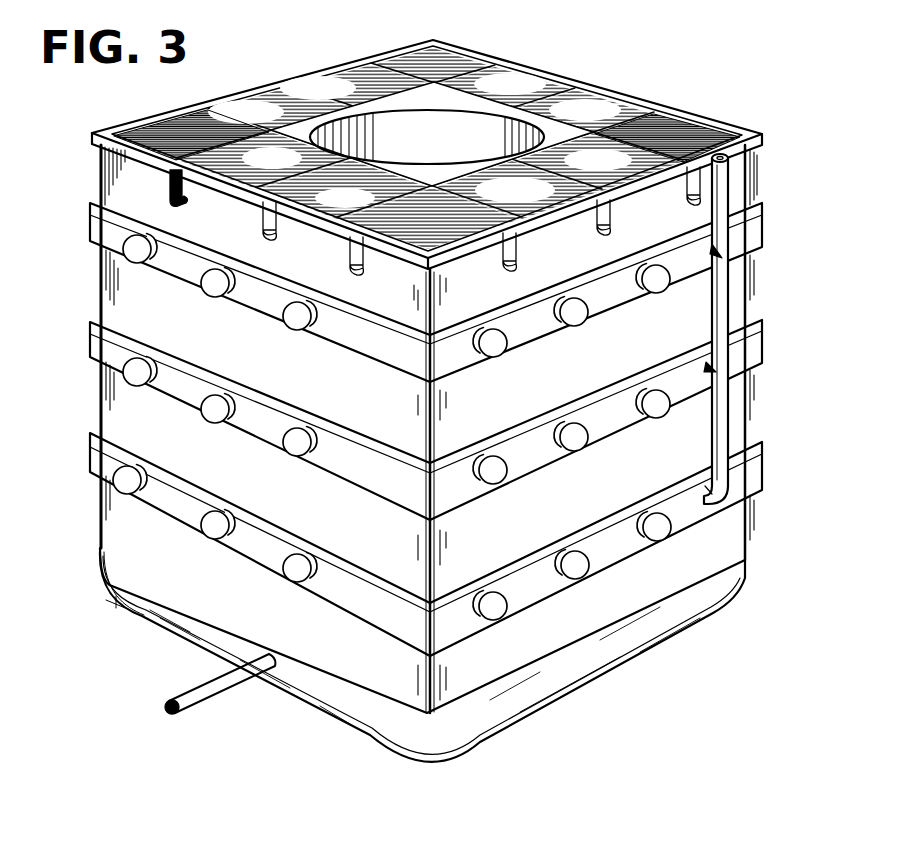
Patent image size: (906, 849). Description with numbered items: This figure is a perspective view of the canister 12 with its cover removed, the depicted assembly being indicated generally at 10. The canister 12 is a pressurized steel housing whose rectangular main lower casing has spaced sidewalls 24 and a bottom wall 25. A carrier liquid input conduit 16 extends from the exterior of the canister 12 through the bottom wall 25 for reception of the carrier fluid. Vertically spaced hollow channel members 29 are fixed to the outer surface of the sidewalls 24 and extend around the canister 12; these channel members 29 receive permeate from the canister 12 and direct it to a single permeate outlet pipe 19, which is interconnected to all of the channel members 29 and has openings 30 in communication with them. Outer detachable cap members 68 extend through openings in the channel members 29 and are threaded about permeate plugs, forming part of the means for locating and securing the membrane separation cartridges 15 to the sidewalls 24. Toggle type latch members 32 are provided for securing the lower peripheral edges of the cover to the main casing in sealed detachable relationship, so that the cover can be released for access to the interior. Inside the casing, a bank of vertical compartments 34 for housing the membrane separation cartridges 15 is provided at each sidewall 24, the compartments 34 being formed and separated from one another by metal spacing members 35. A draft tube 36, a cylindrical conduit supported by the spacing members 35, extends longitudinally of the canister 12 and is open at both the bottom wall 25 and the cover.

The container 10 is at (753, 272).
The canister 12 is at (107, 280).
The membrane separation cartridges 15 is at (312, 84).
The input conduit 16 is at (217, 688).
The permeate discharge pipe 19 is at (722, 308).
The sidewalls 24 is at (165, 555).
The bottom wall 25 is at (617, 667).
The hollow channel members 29 is at (467, 457).
The openings 30 is at (708, 364).
The toggle type latch members 32 is at (688, 196).
The vertical compartments 34 is at (200, 162).
The metal spacing members 35 is at (648, 118).
The draft tube 36 is at (442, 150).
The outer detachable cap member 68 is at (294, 438).